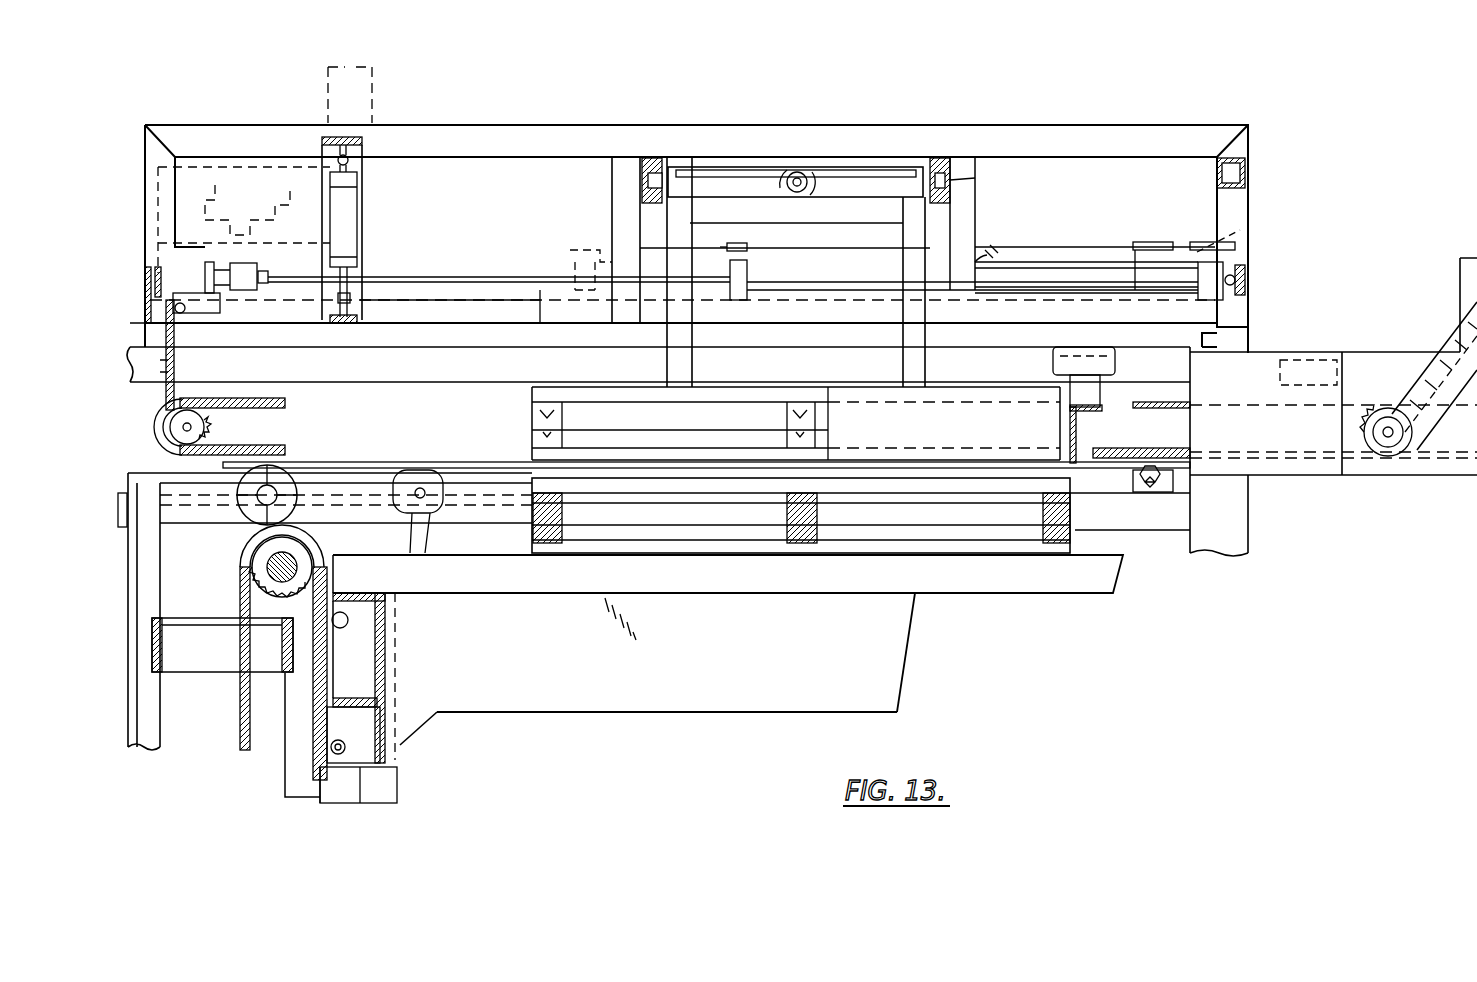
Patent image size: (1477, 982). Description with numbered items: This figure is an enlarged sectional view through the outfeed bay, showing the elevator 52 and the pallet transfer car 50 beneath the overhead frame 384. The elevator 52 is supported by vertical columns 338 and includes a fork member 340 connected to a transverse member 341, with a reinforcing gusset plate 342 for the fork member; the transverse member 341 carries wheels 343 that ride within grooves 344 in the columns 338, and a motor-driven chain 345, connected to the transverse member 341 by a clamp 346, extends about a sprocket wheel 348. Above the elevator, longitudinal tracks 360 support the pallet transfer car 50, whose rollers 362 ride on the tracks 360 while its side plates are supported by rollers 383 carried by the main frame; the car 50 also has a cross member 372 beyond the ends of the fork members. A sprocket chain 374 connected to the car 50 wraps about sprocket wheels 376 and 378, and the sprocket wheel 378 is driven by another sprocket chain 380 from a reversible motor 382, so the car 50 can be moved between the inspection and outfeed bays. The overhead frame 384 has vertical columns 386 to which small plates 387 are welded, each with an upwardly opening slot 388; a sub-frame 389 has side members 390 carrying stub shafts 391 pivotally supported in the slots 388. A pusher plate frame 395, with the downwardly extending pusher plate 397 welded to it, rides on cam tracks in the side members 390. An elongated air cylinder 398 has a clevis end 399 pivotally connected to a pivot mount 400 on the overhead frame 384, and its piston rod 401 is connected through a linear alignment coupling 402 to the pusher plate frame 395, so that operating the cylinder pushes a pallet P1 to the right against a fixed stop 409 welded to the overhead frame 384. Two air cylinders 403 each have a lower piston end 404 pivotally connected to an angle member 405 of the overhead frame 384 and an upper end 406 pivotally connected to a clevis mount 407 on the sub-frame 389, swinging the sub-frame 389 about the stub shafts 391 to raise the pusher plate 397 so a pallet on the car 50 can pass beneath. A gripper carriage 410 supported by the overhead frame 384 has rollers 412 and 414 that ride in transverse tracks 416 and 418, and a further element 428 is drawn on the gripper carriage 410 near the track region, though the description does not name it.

The overhead frame 384 is at (932, 128).
The pusher plate 397 is at (155, 225).
The pallet P1 is at (520, 462).
The sprocket chain 374 is at (288, 404).
The sprocket wheel 376 is at (168, 436).
The clevis mount 407 is at (372, 140).
The upper end 406 is at (362, 170).
The air cylinder 403 is at (357, 208).
The lower piston end 404 is at (350, 290).
The linear alignment coupling 402 is at (245, 263).
The piston rod 401 is at (282, 240).
The pusher plate frame 395 is at (210, 185).
The angle member 405 is at (395, 322).
The side member 390 is at (535, 245).
The track 416 is at (652, 158).
The roller 412 is at (662, 175).
The gripper carriage 410 is at (840, 168).
The gear 428 is at (778, 172).
The elongated air cylinder 398 is at (985, 262).
The track 418 is at (950, 160).
The roller 414 is at (975, 180).
The sub-frame 389 is at (1068, 243).
The plate 387 is at (1143, 242).
The slot 388 is at (1175, 245).
The vertical column 386 is at (1248, 198).
The stub shaft 391 is at (1245, 232).
The clevis end 399 is at (1240, 265).
The pivot mount 400 is at (1245, 290).
The cross member 372 is at (1225, 480).
The sprocket wheel 378 is at (1386, 460).
The sprocket chain 380 is at (1452, 332).
The reversible motor 382 is at (1460, 268).
The fixed stop 409 is at (1078, 438).
The longitudinal track 360 is at (1110, 520).
The pallet transfer car 50 is at (1090, 500).
The roller 362 is at (245, 515).
The roller 383 is at (315, 500).
The sprocket wheel 348 is at (250, 590).
The chain 345 is at (240, 738).
The clamp 346 is at (310, 705).
The vertical column 338 is at (285, 795).
The groove 344 is at (335, 803).
The wheel 343 is at (400, 633).
The transverse member 341 is at (392, 745).
The fork member 340 is at (988, 593).
The gusset plate 342 is at (895, 692).
The elevator 52 is at (725, 715).